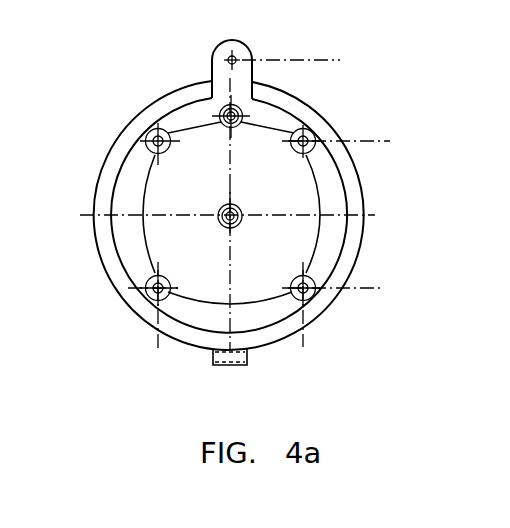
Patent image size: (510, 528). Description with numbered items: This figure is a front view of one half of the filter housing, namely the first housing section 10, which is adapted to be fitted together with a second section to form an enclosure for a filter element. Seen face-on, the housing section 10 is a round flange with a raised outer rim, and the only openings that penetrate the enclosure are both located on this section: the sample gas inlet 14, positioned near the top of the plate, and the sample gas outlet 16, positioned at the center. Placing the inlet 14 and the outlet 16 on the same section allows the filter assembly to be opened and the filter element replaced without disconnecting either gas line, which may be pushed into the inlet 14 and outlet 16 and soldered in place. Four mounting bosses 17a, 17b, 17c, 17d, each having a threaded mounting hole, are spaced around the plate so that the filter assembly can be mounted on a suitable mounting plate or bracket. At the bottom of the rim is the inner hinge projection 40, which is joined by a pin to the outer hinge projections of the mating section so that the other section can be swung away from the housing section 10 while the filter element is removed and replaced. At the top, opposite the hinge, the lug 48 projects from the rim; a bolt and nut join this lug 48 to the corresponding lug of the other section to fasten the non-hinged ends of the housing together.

The first housing section 10 is at (363, 240).
The sample gas inlet 14 is at (241, 104).
The sample gas outlet 16 is at (223, 226).
The mounting boss 17a is at (316, 296).
The mounting boss 17b is at (309, 132).
The mounting boss 17c is at (150, 293).
The mounting boss 17d is at (165, 130).
The inner hinge projection 40 is at (195, 357).
The lug 48 is at (248, 43).